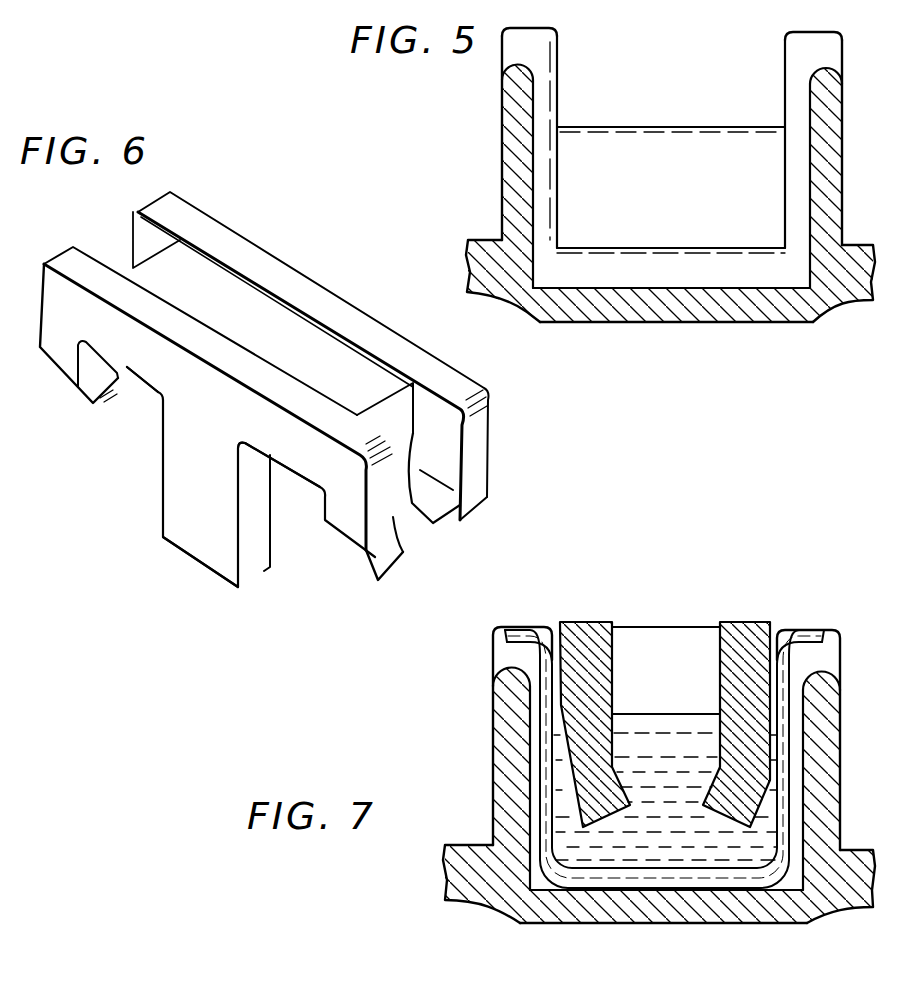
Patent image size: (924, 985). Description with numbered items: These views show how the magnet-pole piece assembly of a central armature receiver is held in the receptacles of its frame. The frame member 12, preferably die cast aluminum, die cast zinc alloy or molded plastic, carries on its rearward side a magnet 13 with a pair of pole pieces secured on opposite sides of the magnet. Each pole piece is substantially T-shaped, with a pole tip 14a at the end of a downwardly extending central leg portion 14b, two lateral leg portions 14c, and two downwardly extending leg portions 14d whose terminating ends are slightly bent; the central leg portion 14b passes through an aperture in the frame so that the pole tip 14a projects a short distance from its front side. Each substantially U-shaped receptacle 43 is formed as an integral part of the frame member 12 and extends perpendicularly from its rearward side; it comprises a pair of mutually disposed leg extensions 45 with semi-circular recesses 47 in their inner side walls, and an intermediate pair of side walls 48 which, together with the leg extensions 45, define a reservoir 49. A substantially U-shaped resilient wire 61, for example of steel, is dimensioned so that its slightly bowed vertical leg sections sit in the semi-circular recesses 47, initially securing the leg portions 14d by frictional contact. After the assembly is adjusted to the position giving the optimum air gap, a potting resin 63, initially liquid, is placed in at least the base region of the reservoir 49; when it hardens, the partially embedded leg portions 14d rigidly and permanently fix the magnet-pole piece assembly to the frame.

In FIG. 5, the frame member 12 is at (481, 261).
In FIG. 7, the frame member 12 is at (468, 877).
In FIG. 6, the magnet 13 is at (217, 284).
In FIG. 7, the magnet 13 is at (635, 642).
In FIG. 6, the pole tip 14a is at (177, 553).
In FIG. 6, the central leg portion 14b is at (188, 513).
In FIG. 6, the lateral leg portions 14c is at (143, 355).
In FIG. 6, the downwardly extending leg portions 14d is at (133, 243).
In FIG. 7, the downwardly extending leg portions 14d is at (573, 768).
In FIG. 5, the receptacle 43 is at (485, 150).
In FIG. 7, the receptacle 43 is at (770, 610).
In FIG. 5, the leg extensions 45 is at (530, 86).
In FIG. 7, the leg extensions 45 is at (507, 723).
In FIG. 5, the semi-circular recesses 47 is at (538, 107).
In FIG. 7, the semi-circular recesses 47 is at (533, 695).
In FIG. 5, the side walls 48 is at (695, 143).
In FIG. 7, the side walls 48 is at (685, 733).
In FIG. 5, the reservoir 49 is at (636, 140).
In FIG. 7, the reservoir 49 is at (643, 730).
In FIG. 7, the U-shaped resilient wire 61 is at (540, 750).
In FIG. 7, the potting resin 63 is at (672, 842).